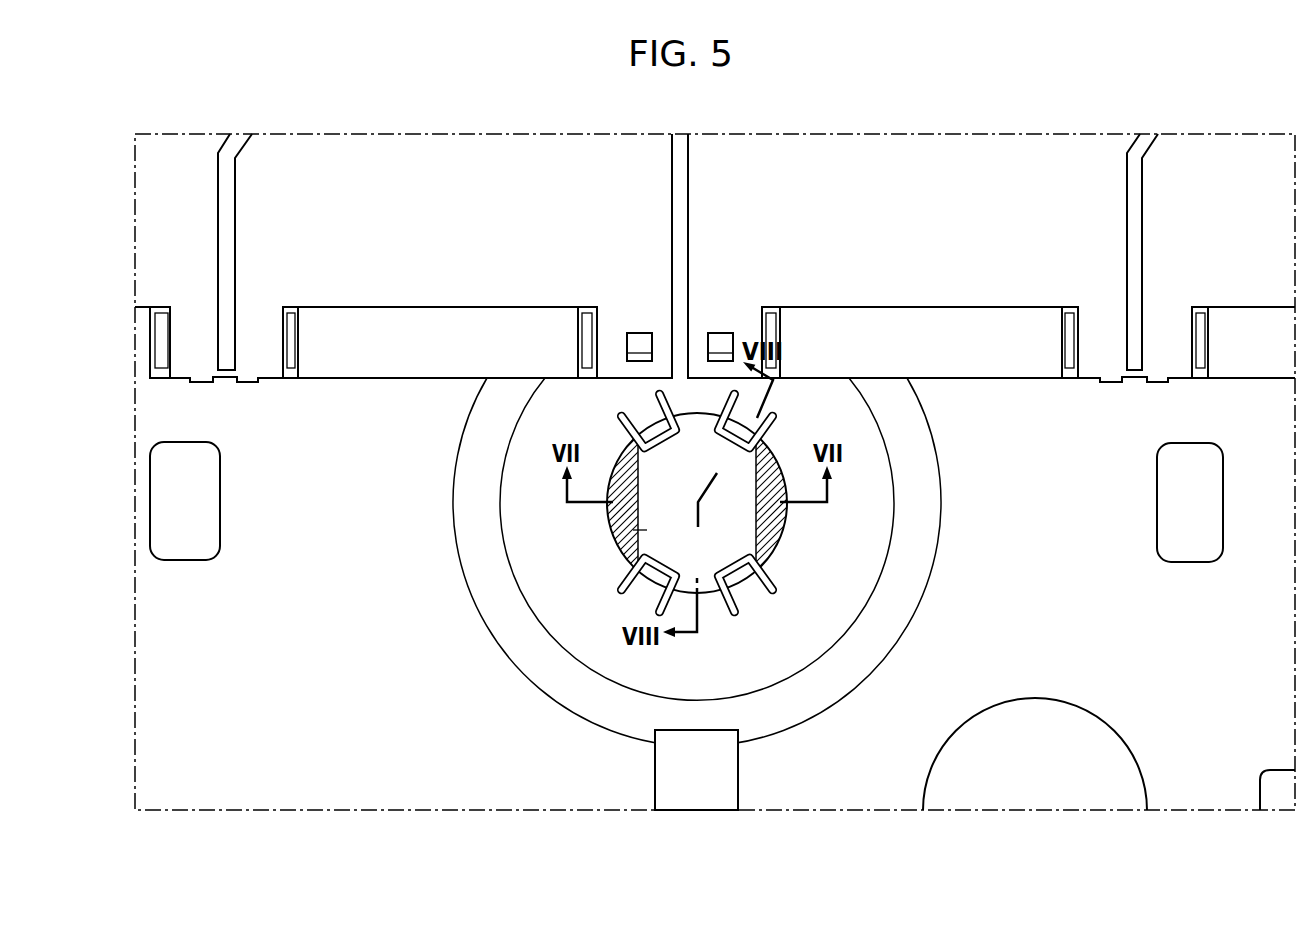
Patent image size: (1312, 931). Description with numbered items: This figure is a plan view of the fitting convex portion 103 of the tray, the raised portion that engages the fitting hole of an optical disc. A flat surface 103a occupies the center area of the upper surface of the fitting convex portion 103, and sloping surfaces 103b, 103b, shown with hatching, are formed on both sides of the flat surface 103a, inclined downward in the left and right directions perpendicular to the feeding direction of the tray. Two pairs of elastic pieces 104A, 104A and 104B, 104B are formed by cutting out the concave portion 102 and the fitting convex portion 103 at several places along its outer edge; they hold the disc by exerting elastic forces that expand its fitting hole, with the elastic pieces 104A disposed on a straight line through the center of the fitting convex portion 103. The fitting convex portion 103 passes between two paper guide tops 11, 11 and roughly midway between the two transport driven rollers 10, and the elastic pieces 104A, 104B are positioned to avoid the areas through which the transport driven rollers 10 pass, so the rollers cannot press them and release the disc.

The transport driven roller 10 is at (430, 325).
The paper guide top 11 is at (442, 182).
The concave portion 102 is at (288, 642).
The fitting convex portion 103 is at (720, 593).
The flat surface 103a is at (640, 530).
The sloping surface 103b is at (612, 512).
The elastic piece 104A is at (765, 425).
The elastic piece 104B is at (640, 425).